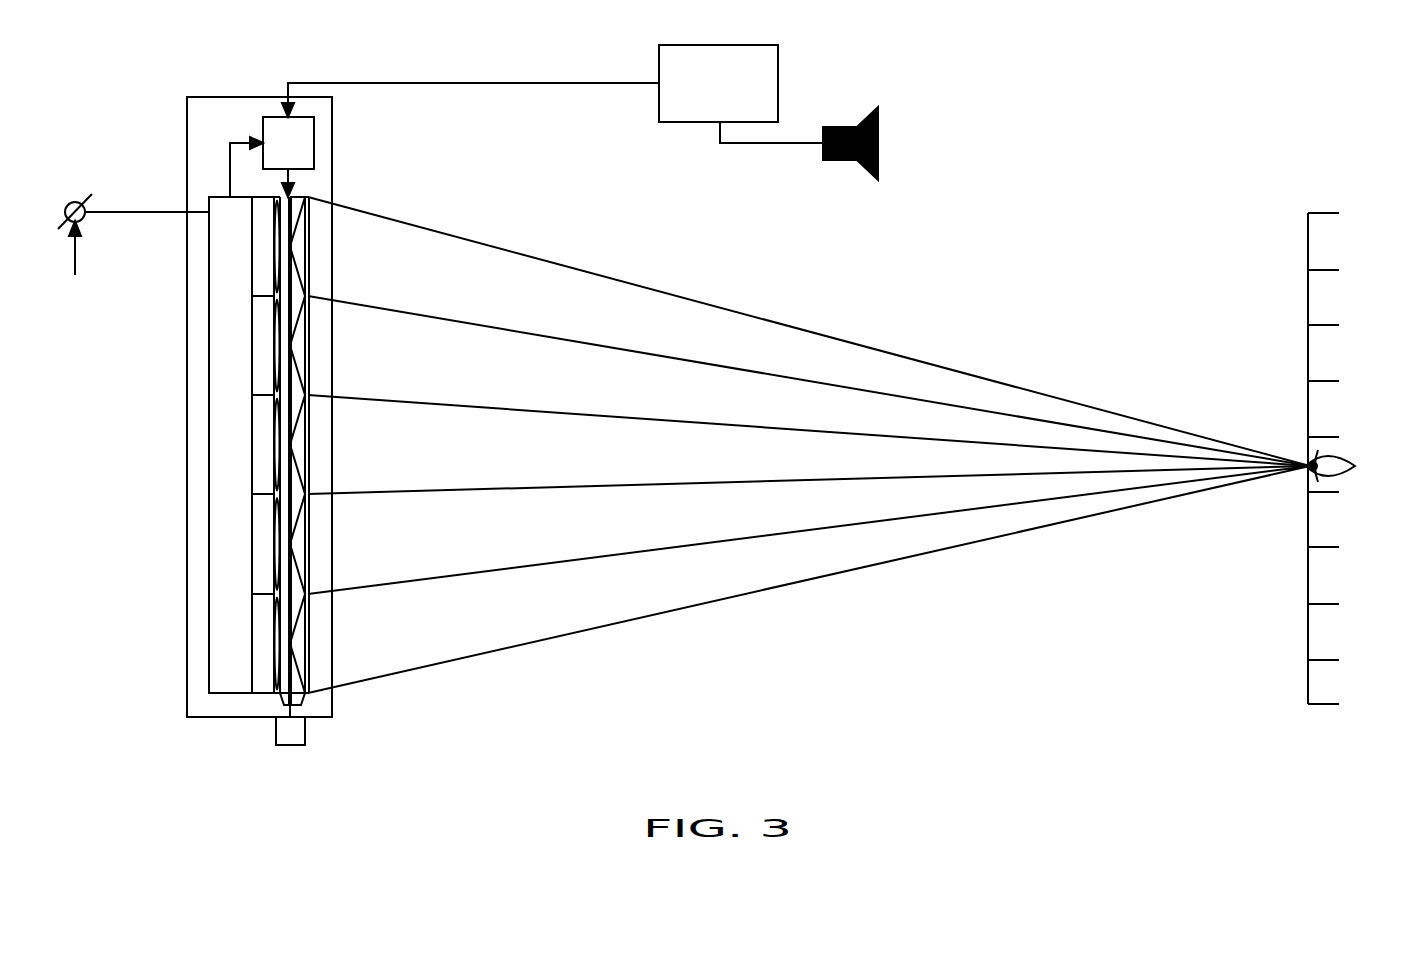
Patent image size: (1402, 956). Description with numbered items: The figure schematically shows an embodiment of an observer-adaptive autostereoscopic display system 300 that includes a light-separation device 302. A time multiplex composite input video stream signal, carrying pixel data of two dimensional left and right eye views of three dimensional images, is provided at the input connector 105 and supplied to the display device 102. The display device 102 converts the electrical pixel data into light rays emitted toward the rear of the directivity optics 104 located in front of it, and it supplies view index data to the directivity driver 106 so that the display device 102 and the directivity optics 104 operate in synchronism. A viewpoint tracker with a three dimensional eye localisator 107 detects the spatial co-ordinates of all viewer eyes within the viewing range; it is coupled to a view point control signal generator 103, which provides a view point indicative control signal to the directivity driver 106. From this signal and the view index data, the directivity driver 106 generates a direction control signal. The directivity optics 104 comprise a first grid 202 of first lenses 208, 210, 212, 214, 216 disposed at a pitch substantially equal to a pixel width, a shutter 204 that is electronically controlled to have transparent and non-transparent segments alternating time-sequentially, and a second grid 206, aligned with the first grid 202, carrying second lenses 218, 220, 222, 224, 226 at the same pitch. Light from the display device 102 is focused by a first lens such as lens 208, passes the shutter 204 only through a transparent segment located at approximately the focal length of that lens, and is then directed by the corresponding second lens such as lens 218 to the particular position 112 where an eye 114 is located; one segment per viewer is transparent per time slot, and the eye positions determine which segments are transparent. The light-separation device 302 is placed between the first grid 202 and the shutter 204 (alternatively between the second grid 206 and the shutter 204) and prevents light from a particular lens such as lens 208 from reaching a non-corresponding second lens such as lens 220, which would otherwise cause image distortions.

The observer-adaptive autostereoscopic display system 300 is at (213, 97).
The display device 102 is at (209, 197).
The input connector 105 is at (67, 205).
The directivity driver 106 is at (314, 143).
The view point control signal generator 103 is at (552, 94).
The 3D eye localisator 107 is at (880, 146).
The first grid 202 is at (275, 694).
The light-separation device 302 is at (276, 700).
The shutter 204 is at (309, 698).
The second grid 206 is at (307, 693).
The first lens 208 is at (273, 640).
The first lens 210 is at (273, 542).
The first lens 212 is at (273, 445).
The first lens 214 is at (273, 343).
The first lens 216 is at (273, 250).
The second lens 218 is at (311, 640).
The second lens 220 is at (311, 542).
The second lens 222 is at (311, 444).
The second lens 224 is at (311, 341).
The second lens 226 is at (311, 252).
The directivity optics 104 is at (287, 746).
The position 112 is at (1326, 455).
The eye 114 is at (1326, 478).